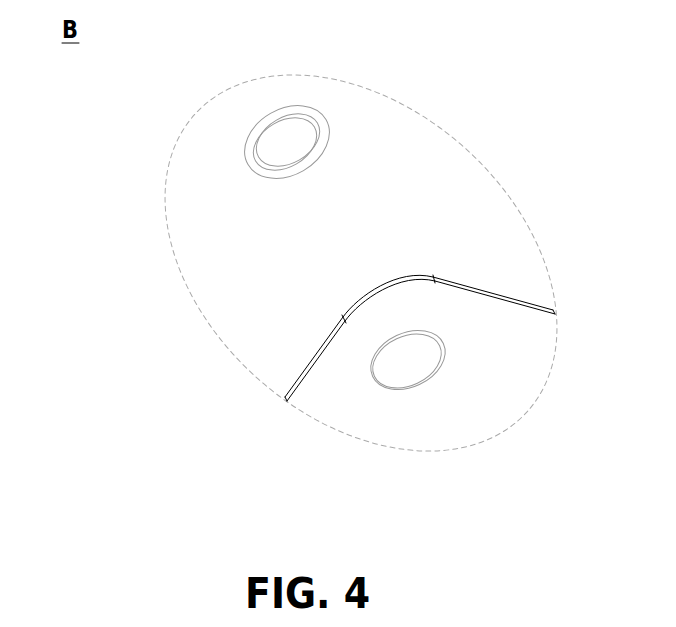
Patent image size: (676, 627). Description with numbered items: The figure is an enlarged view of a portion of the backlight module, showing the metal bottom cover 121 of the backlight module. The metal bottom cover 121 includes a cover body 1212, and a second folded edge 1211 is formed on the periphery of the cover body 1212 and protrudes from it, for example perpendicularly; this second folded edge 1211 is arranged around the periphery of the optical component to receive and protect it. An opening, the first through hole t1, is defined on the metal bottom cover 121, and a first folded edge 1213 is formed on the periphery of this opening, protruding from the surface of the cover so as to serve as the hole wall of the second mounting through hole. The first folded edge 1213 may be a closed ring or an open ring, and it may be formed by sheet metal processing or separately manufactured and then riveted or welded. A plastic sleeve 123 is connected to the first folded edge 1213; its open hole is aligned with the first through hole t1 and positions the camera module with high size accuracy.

The metal bottom cover 121 is at (368, 411).
The second folded edge 1211 is at (302, 366).
The cover body 1212 is at (343, 377).
The first folded edge 1213 is at (451, 396).
The plastic sleeve 123 is at (267, 167).
The first through hole t1 is at (410, 365).